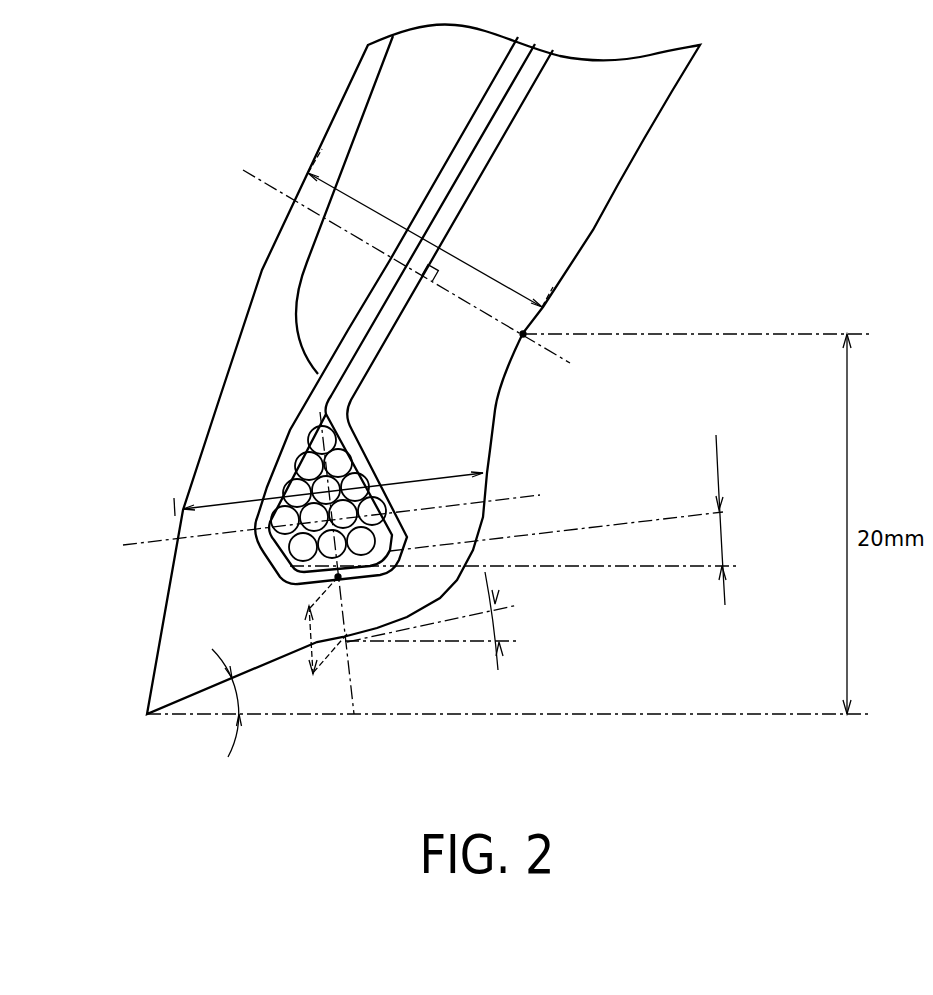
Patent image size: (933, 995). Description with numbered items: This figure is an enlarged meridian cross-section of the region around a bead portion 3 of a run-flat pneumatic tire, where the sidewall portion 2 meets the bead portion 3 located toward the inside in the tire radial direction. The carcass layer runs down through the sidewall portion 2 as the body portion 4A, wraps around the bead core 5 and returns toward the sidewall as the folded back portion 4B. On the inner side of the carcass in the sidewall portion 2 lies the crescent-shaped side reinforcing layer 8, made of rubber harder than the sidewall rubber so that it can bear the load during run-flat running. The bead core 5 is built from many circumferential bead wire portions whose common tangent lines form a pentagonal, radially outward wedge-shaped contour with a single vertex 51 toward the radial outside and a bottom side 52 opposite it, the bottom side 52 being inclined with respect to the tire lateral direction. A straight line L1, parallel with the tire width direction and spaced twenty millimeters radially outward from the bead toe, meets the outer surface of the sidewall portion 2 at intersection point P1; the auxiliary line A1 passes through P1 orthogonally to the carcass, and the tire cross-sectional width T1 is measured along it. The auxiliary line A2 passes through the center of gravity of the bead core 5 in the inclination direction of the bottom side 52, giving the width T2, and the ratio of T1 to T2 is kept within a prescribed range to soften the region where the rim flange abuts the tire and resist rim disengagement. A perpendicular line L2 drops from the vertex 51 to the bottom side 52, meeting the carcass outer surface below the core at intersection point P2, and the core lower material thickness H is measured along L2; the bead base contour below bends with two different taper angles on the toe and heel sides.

The sidewall portion 2 is at (685, 163).
The bead portion 3 is at (545, 688).
The body portion 4A is at (288, 462).
The folded back portion 4B is at (348, 435).
The bead core 5 is at (286, 567).
The vertex 51 is at (320, 413).
The bottom side 52 is at (347, 580).
The side reinforcing layer 8 is at (413, 105).
The auxiliary line A1 is at (272, 189).
The auxiliary line A2 is at (153, 540).
The straight line L1 is at (782, 335).
The perpendicular line L2 is at (353, 713).
The intersection point P1 is at (523, 334).
The intersection point P2 is at (338, 577).
The tire cross-sectional width T1 is at (430, 228).
The tire cross-sectional width T2 is at (328, 494).
The thickness of core lower material H is at (297, 625).